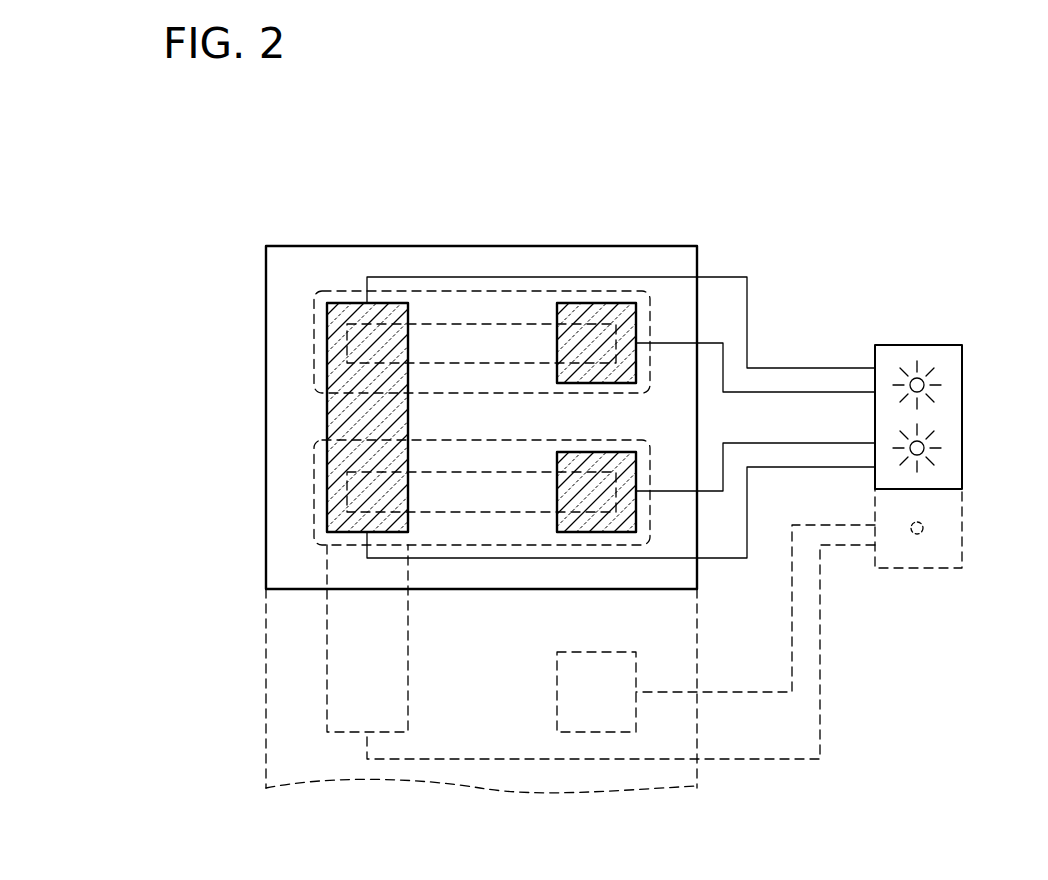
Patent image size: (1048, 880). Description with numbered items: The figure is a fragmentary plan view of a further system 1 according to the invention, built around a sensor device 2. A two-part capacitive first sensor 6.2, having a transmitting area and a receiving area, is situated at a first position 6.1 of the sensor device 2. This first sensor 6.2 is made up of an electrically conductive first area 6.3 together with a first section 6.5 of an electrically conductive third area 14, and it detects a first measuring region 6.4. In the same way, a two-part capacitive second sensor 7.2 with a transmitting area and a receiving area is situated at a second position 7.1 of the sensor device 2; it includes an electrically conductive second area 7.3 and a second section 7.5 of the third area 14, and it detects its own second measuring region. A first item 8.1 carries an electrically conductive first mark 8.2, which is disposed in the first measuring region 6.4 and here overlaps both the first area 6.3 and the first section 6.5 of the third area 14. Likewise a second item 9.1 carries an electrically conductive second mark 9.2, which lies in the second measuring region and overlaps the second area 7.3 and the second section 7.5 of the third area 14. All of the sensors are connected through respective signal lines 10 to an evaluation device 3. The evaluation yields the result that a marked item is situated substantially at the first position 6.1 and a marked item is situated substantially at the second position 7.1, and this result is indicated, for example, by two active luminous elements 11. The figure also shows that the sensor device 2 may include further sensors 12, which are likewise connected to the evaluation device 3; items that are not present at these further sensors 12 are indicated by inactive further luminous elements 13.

The device 1 is at (895, 203).
The sensor device 2 is at (678, 246).
The evaluation device 3 is at (943, 358).
The first position 6.1 is at (397, 341).
The first sensor 6.2 is at (397, 341).
The first area 6.3 is at (597, 302).
The first measuring region 6.4 is at (570, 302).
The first section 6.5 is at (327, 340).
The second position 7.1 is at (522, 588).
The second sensor 7.2 is at (522, 588).
The second area 7.3 is at (633, 502).
The second section 7.5 is at (327, 470).
The first item 8.1 is at (613, 290).
The first mark 8.2 is at (637, 302).
The second item 9.1 is at (313, 523).
The second mark 9.2 is at (367, 513).
The signal lines 10 is at (853, 466).
The active luminous elements 11 is at (922, 448).
The further sensors 12 is at (576, 724).
The inactive further luminous elements 13 is at (917, 535).
The third area 14 is at (327, 418).